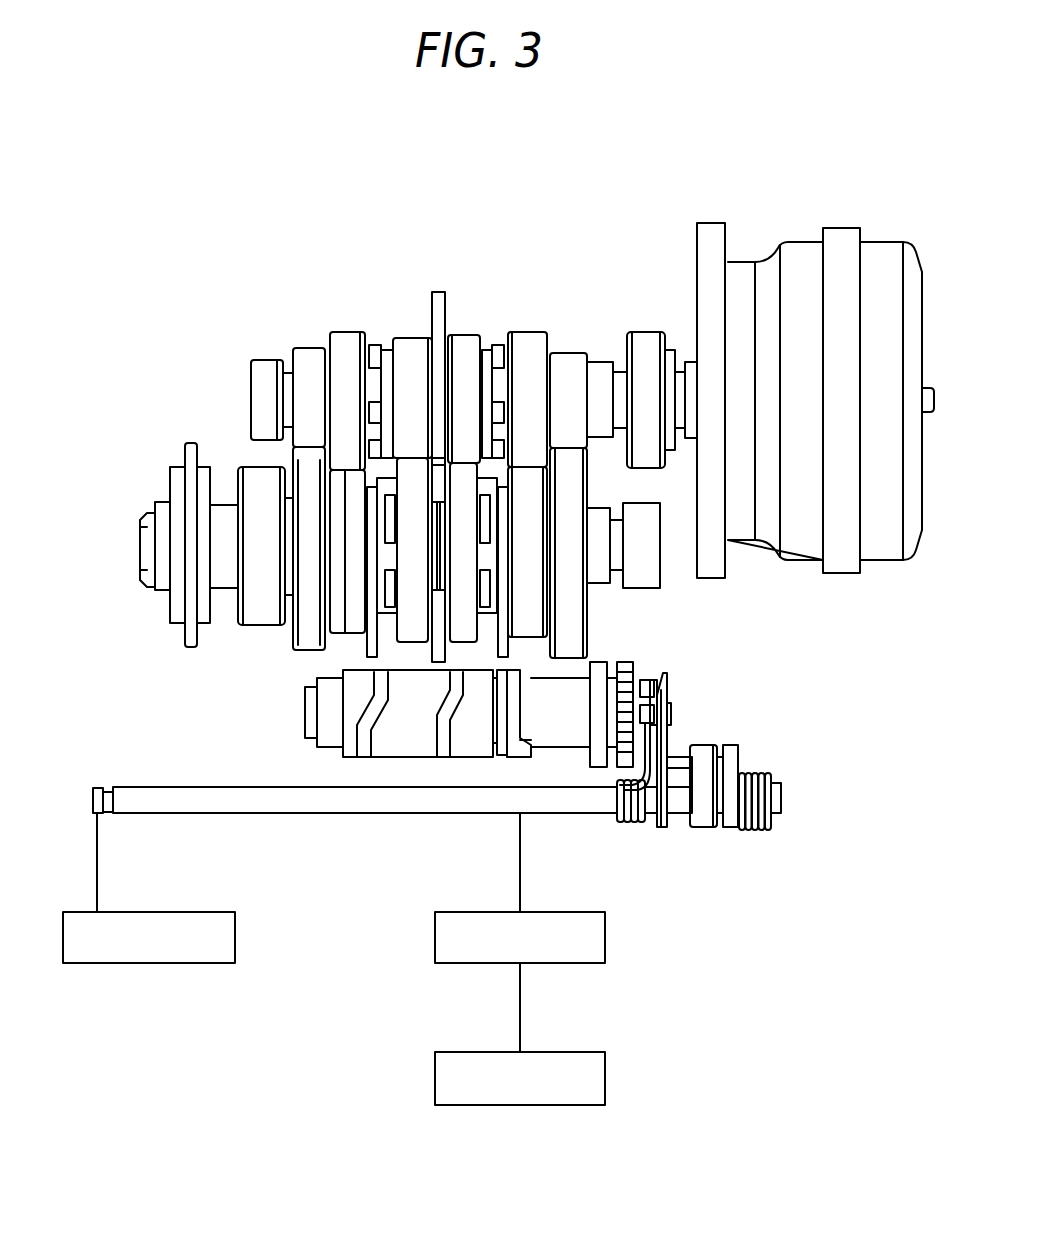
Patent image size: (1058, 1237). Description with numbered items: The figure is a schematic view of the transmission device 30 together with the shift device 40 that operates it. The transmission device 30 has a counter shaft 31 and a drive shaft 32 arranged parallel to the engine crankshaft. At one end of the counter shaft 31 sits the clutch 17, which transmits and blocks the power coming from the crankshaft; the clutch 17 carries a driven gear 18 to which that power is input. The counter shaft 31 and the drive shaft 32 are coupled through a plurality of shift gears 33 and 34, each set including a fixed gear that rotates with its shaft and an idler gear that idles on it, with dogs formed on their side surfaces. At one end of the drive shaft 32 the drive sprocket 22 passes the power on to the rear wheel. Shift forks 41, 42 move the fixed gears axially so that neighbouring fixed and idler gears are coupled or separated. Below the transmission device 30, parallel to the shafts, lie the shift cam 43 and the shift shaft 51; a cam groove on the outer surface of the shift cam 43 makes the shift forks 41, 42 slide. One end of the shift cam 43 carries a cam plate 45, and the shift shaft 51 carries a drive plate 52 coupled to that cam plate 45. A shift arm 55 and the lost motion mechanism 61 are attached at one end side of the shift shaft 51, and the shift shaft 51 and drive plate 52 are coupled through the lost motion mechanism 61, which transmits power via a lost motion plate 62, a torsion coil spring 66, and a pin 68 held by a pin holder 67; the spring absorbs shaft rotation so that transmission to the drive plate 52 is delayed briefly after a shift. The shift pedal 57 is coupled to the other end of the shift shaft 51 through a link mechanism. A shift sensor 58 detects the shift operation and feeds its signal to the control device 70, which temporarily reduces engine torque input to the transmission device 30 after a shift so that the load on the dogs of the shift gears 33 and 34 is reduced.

The clutch 17 is at (838, 232).
The driven gear 18 is at (711, 233).
The drive sprocket 22 is at (183, 462).
The transmission device 30 is at (228, 264).
The counter shaft 31 is at (270, 368).
The drive shaft 32 is at (225, 578).
The shift gears 33 is at (405, 340).
The shift gears 34 is at (410, 630).
The shift device 40 is at (812, 769).
The shift fork 41 is at (432, 310).
The shift fork 42 is at (368, 573).
The shift cam 43 is at (473, 745).
The cam plate 45 is at (628, 668).
The shift shaft 51 is at (357, 800).
The drive plate 52 is at (665, 738).
The shift arm 55 is at (633, 810).
The shift pedal 57 is at (198, 912).
The shift sensor 58 is at (582, 912).
The lost motion mechanism 61 is at (732, 845).
The lost motion plate 62 is at (735, 757).
The torsion coil spring 66 is at (760, 830).
The pin holder 67 is at (705, 813).
The pin 68 is at (680, 765).
The control device 70 is at (560, 1052).